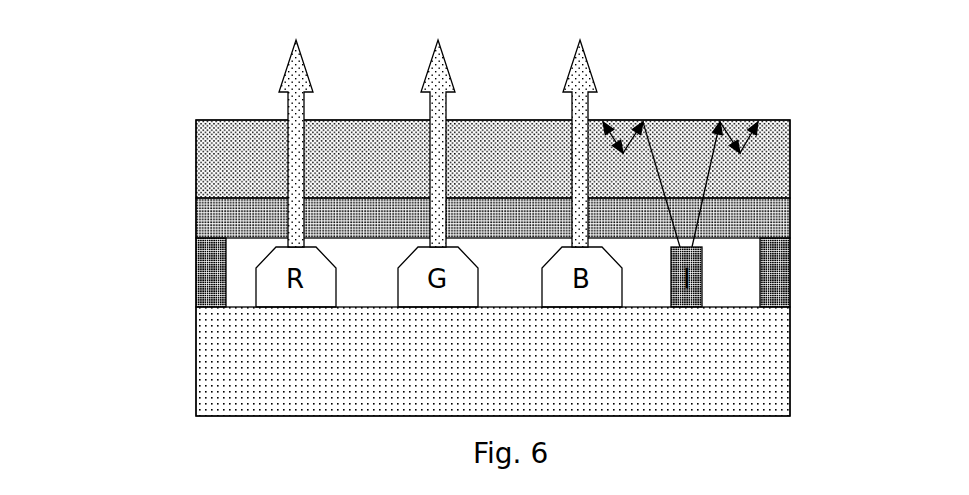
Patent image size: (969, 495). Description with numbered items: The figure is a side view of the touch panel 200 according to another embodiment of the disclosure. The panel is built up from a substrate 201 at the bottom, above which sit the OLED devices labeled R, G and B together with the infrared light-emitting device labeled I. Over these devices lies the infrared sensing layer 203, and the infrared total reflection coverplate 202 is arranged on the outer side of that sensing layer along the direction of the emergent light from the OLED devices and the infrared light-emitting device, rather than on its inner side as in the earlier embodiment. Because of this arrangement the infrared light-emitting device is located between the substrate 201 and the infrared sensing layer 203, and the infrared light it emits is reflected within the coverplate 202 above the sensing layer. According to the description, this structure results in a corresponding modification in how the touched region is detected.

The touch panel 200 is at (818, 140).
The substrate 201 is at (218, 357).
The infrared total reflection coverplate 202 is at (217, 140).
The infrared sensing layer 203 is at (217, 218).